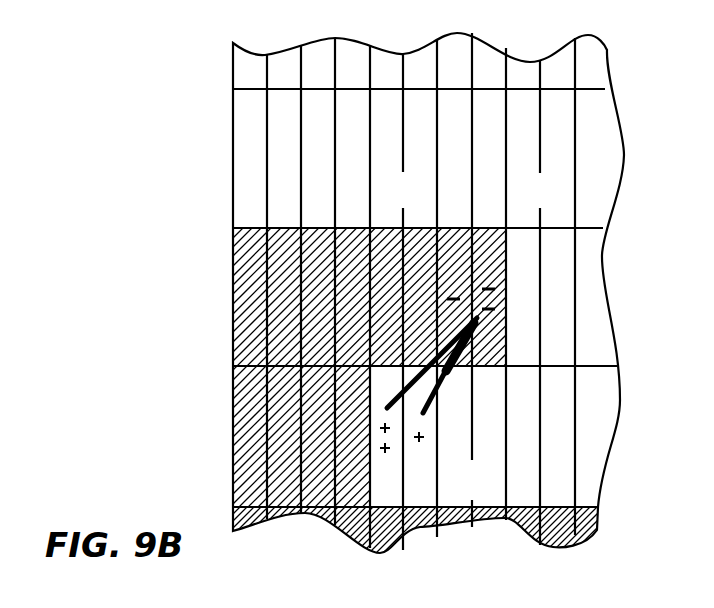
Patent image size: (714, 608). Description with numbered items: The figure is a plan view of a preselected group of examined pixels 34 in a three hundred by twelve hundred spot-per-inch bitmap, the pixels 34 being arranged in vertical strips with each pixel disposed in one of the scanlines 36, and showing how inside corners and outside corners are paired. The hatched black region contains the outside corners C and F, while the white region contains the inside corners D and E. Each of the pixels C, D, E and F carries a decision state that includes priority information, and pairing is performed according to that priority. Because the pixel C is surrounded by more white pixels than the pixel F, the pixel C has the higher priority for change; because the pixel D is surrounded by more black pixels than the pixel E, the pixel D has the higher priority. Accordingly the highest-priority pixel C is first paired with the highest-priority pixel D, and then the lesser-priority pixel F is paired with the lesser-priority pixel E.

The pixels 34 is at (591, 336).
The scanlines 36 is at (223, 90).
The outside corner pixel C is at (492, 228).
The inside corner pixel D is at (396, 480).
The inside corner pixel E is at (430, 456).
The outside corner pixel F is at (448, 228).